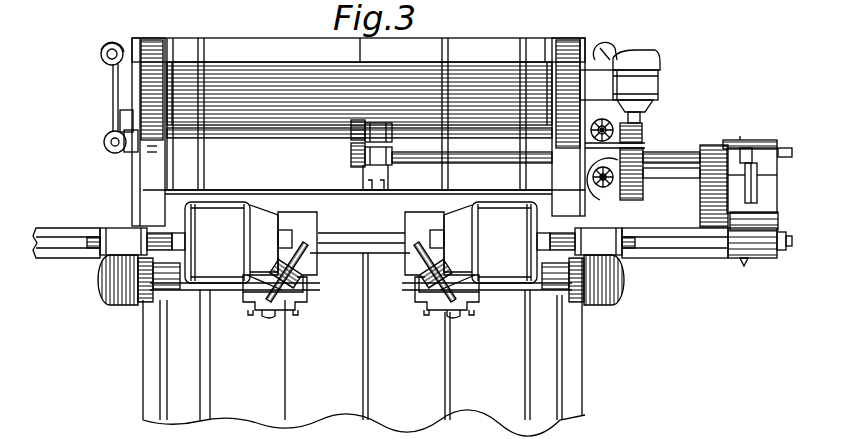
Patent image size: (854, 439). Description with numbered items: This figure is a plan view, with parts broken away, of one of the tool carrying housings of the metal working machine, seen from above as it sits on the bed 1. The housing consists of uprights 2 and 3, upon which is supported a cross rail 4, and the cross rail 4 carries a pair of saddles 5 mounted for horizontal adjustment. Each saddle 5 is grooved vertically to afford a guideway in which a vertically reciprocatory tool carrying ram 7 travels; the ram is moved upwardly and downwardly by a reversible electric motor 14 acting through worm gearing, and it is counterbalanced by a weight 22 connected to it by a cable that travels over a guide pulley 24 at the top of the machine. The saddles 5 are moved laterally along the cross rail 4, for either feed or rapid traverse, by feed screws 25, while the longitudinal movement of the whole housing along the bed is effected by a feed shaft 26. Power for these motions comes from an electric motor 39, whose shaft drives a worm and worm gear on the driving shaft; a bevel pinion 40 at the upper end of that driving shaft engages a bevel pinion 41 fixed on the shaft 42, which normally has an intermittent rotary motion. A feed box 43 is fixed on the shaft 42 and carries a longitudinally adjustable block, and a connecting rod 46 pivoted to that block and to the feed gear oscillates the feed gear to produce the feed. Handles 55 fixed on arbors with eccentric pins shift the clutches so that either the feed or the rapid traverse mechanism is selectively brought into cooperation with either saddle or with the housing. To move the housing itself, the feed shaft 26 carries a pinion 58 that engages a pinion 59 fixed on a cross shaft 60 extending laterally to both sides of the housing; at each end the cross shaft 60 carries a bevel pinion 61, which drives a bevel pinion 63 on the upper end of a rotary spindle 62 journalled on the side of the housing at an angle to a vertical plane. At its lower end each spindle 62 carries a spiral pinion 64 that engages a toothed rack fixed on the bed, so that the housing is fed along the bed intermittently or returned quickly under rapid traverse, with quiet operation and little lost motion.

The bed 1 is at (498, 44).
The upright 2 is at (569, 40).
The upright 3 is at (150, 160).
The cross rail 4 is at (696, 250).
The saddle 5 is at (520, 285).
The tool carrying ram 7 is at (270, 314).
The reversible electric motor 14 is at (232, 243).
The weight 22 is at (318, 222).
The guide pulley 24 is at (428, 262).
The feed screw 25 is at (786, 250).
The feed shaft 26 is at (503, 158).
The electric motor 39 is at (655, 72).
The bevel pinion 40 is at (604, 182).
The bevel pinion 41 is at (625, 196).
The shaft 42 is at (695, 178).
The feed box 43 is at (748, 160).
The connecting rod 46 is at (760, 185).
The handle 55 is at (747, 262).
The pinion 58 is at (352, 166).
The pinion 59 is at (350, 138).
The cross shaft 60 is at (256, 132).
The bevel pinion 61 is at (112, 121).
The rotary spindle 62 is at (110, 92).
The bevel pinion 63 is at (108, 148).
The spiral pinion 64 is at (101, 52).